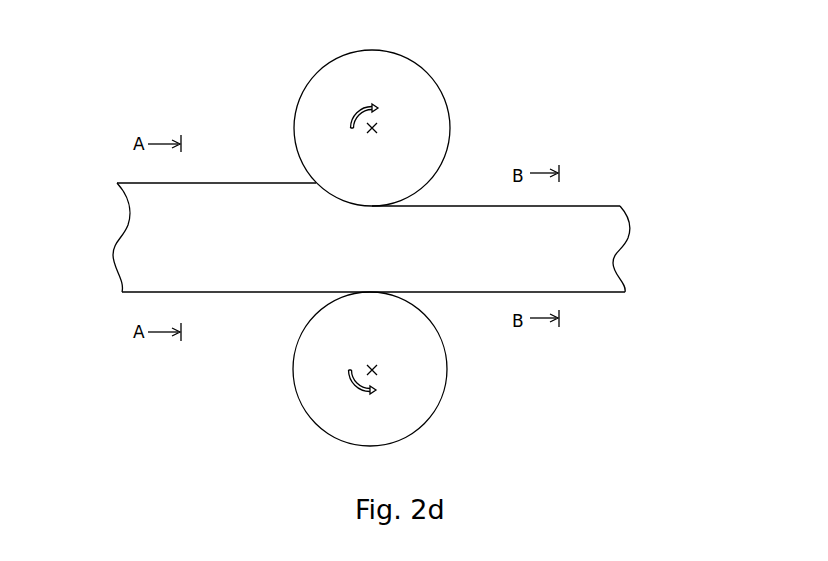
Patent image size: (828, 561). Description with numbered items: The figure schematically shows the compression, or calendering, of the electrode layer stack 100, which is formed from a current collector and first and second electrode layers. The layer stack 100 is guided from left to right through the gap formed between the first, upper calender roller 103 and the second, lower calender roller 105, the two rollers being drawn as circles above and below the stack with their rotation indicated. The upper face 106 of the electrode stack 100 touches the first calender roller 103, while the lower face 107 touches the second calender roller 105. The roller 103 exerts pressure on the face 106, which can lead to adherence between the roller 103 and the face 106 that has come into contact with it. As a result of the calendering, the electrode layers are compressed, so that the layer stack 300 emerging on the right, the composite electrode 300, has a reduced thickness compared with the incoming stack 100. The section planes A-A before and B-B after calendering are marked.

The electrode layer stack 100 is at (337, 240).
The composite electrode 300 is at (625, 247).
The first (upper) calender roller 103 is at (450, 125).
The second (lower) calender roller 105 is at (448, 368).
The face of the electrode stack which touches the first calender roller 106 is at (248, 183).
The face of the electrode stack which touches the second calender roller 107 is at (247, 293).